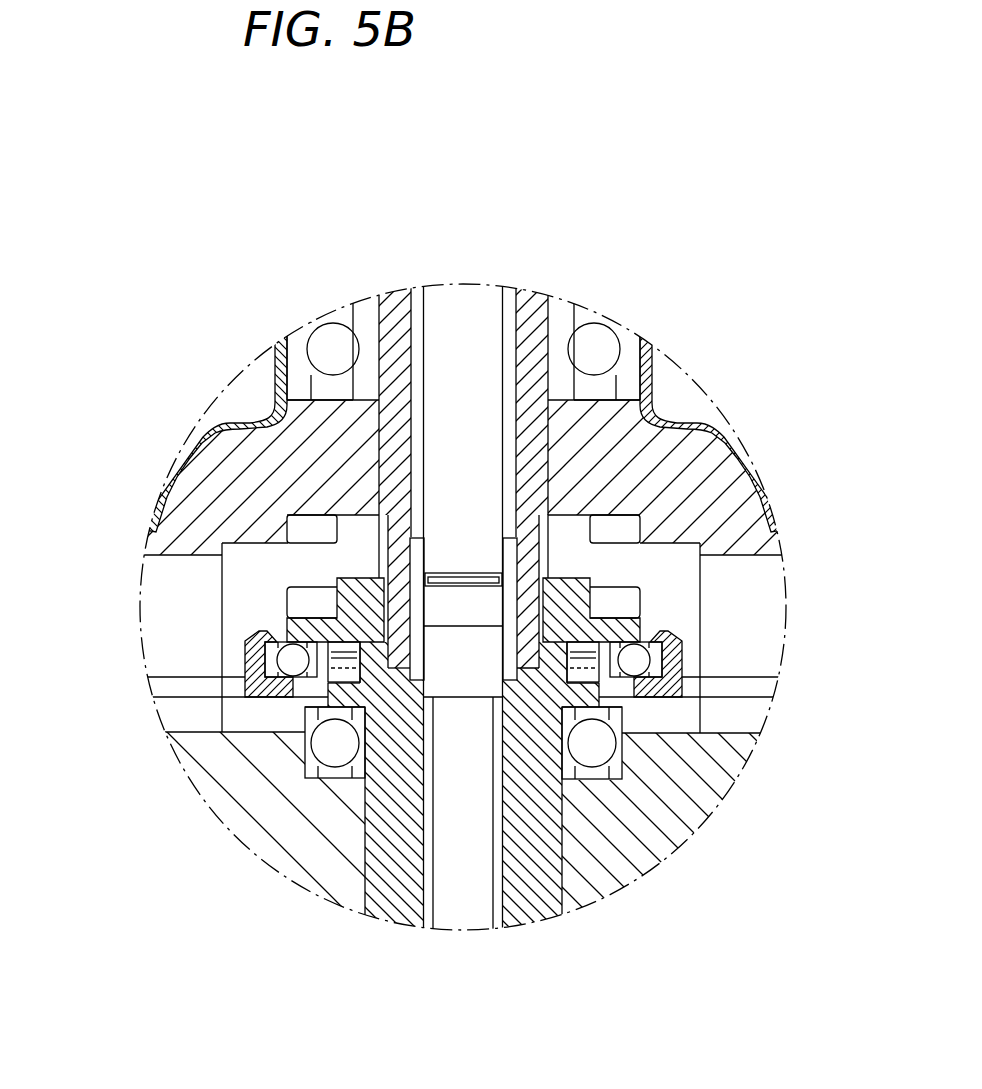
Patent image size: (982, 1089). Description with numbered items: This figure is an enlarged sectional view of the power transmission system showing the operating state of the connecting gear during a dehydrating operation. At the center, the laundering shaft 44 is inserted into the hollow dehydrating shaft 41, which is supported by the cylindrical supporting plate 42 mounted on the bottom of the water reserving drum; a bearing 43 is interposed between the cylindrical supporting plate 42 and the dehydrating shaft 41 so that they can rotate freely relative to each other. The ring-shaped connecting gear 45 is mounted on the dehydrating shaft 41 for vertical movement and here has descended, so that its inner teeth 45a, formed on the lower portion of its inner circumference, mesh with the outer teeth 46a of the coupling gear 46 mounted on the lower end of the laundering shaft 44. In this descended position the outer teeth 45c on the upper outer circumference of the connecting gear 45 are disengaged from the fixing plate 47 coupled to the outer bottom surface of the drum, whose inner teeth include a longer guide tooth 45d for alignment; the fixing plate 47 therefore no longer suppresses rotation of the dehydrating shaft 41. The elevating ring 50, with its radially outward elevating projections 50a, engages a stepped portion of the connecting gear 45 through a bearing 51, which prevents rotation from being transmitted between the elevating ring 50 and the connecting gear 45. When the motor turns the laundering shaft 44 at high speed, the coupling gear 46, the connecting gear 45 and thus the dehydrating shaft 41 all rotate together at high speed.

The dehydrating shaft 41 is at (538, 298).
The cylindrical supporting plate 42 is at (645, 367).
The bearing 43 is at (602, 332).
The laundering shaft 44 is at (473, 298).
The connecting gear 45 is at (708, 468).
The inner teeth 45a is at (347, 665).
The outer teeth 45c is at (297, 602).
The guide tooth 45d is at (628, 592).
The coupling gear 46 is at (395, 897).
The outer teeth 46a is at (590, 658).
The fixing plate 47 is at (725, 512).
The elevating ring 50 is at (675, 655).
The elevating projections 50a is at (247, 640).
The bearing 51 is at (655, 640).